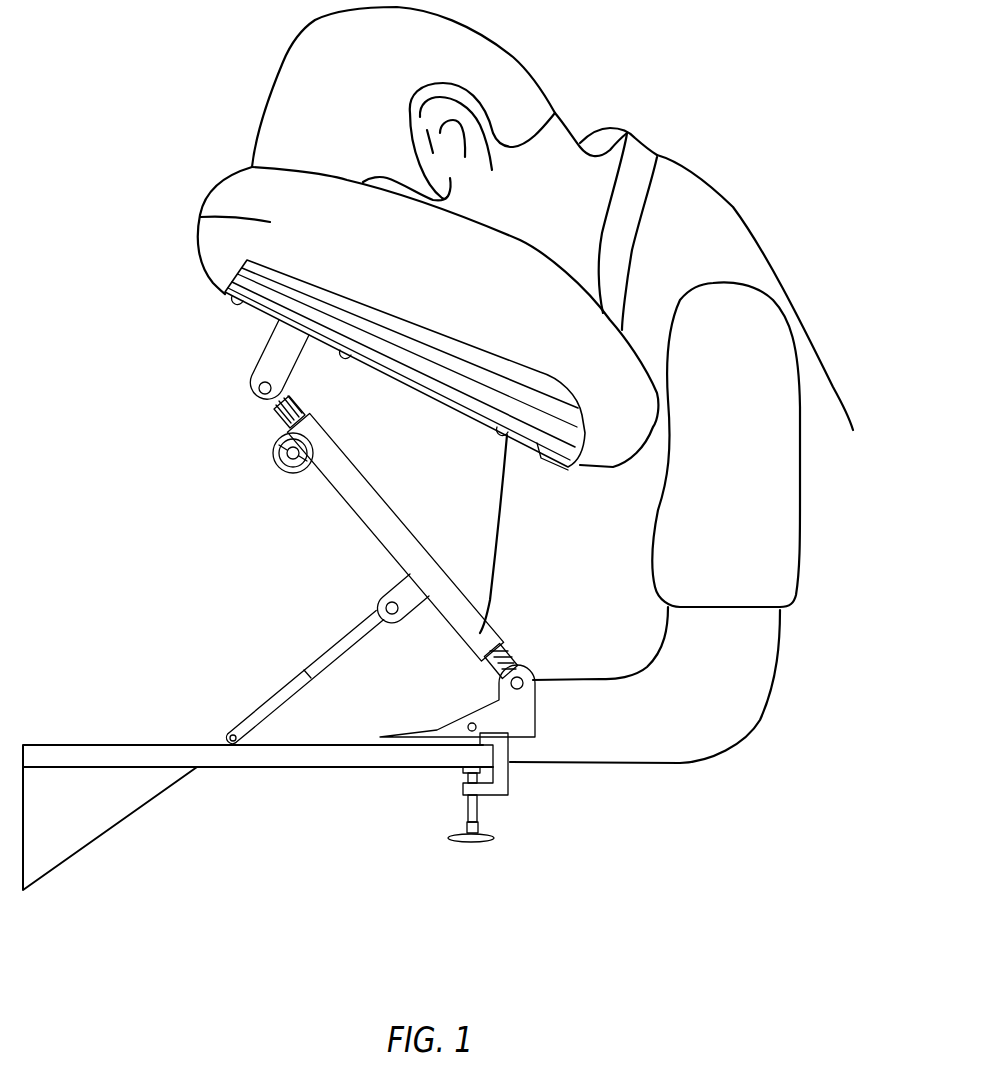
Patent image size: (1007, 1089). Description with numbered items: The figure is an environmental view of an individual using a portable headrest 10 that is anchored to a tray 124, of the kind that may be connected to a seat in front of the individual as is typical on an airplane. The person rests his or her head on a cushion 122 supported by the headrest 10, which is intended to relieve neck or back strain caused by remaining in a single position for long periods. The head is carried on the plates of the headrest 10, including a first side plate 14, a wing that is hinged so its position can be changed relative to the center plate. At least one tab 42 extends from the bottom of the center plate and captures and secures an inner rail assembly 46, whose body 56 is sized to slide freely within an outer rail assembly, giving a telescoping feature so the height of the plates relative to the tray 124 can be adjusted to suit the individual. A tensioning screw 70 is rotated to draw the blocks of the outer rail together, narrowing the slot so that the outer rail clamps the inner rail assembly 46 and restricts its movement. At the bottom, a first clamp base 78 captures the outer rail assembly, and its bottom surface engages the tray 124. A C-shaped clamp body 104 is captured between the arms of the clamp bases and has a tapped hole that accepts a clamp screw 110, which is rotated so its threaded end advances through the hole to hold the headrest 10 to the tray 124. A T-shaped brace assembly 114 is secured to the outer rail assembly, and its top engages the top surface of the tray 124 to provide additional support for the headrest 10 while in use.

The portable headrest 10 is at (177, 152).
The first side plate 14 is at (258, 292).
The tab 42 is at (270, 368).
The inner rail assembly 46 is at (287, 420).
The body 56 is at (360, 510).
The tensioning screw 70 is at (280, 450).
The first clamp base 78 is at (442, 733).
The clamp body 104 is at (493, 787).
The clamp screw 110 is at (472, 830).
The brace assembly 114 is at (297, 683).
The cushion 122 is at (200, 218).
The tray 124 is at (197, 757).